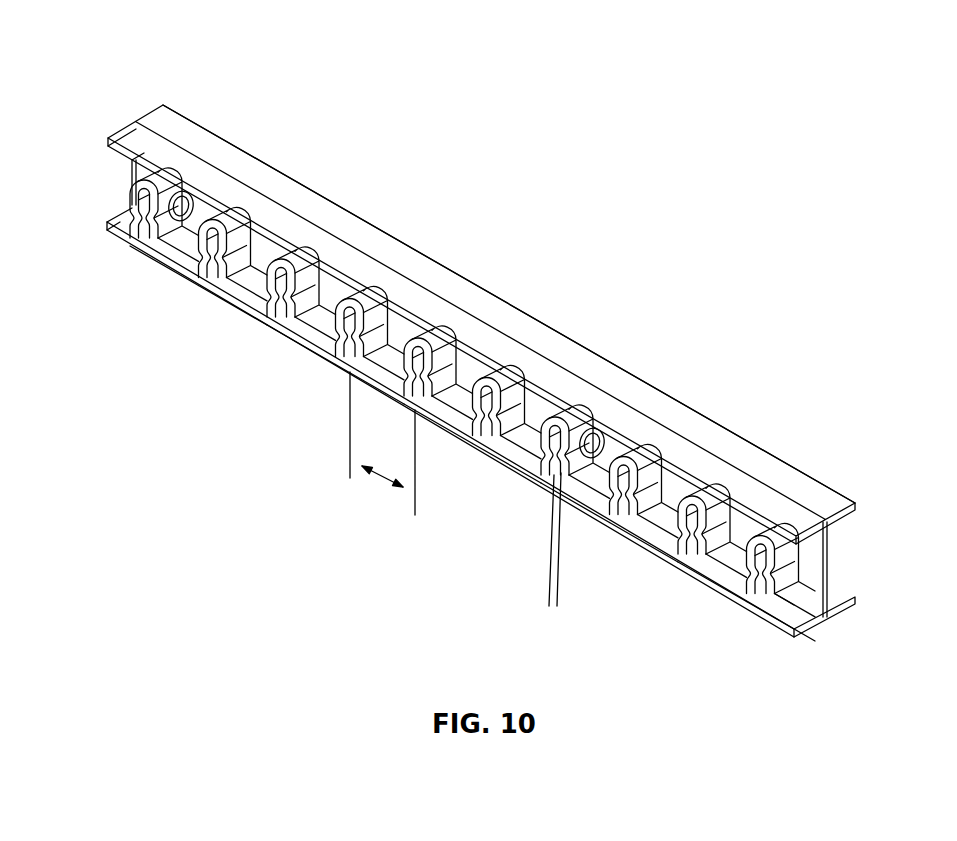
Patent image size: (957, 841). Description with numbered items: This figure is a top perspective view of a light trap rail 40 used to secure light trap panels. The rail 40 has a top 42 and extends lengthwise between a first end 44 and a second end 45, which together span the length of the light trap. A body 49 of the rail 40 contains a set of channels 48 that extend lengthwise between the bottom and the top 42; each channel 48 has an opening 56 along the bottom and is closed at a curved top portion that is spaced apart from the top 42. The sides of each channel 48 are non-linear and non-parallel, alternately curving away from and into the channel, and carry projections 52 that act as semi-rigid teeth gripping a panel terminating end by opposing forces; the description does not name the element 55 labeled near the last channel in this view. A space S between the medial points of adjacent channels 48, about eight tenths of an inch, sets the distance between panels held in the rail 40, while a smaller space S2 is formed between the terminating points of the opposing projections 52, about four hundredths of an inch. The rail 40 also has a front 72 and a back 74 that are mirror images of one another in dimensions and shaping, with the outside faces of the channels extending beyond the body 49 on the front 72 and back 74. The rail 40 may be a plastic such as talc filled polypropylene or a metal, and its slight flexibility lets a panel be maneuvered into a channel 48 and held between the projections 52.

The rail 40 is at (572, 232).
The top 42 is at (676, 407).
The first end 44 is at (836, 560).
The second end 45 is at (130, 185).
The channel 48 is at (211, 305).
The body 49 is at (320, 298).
The projection 52 is at (622, 518).
The end spring finger 55 is at (755, 603).
The opening 56 is at (494, 460).
The front 72 is at (96, 256).
The back 74 is at (248, 130).
The space S is at (382, 443).
The space S2 is at (549, 552).